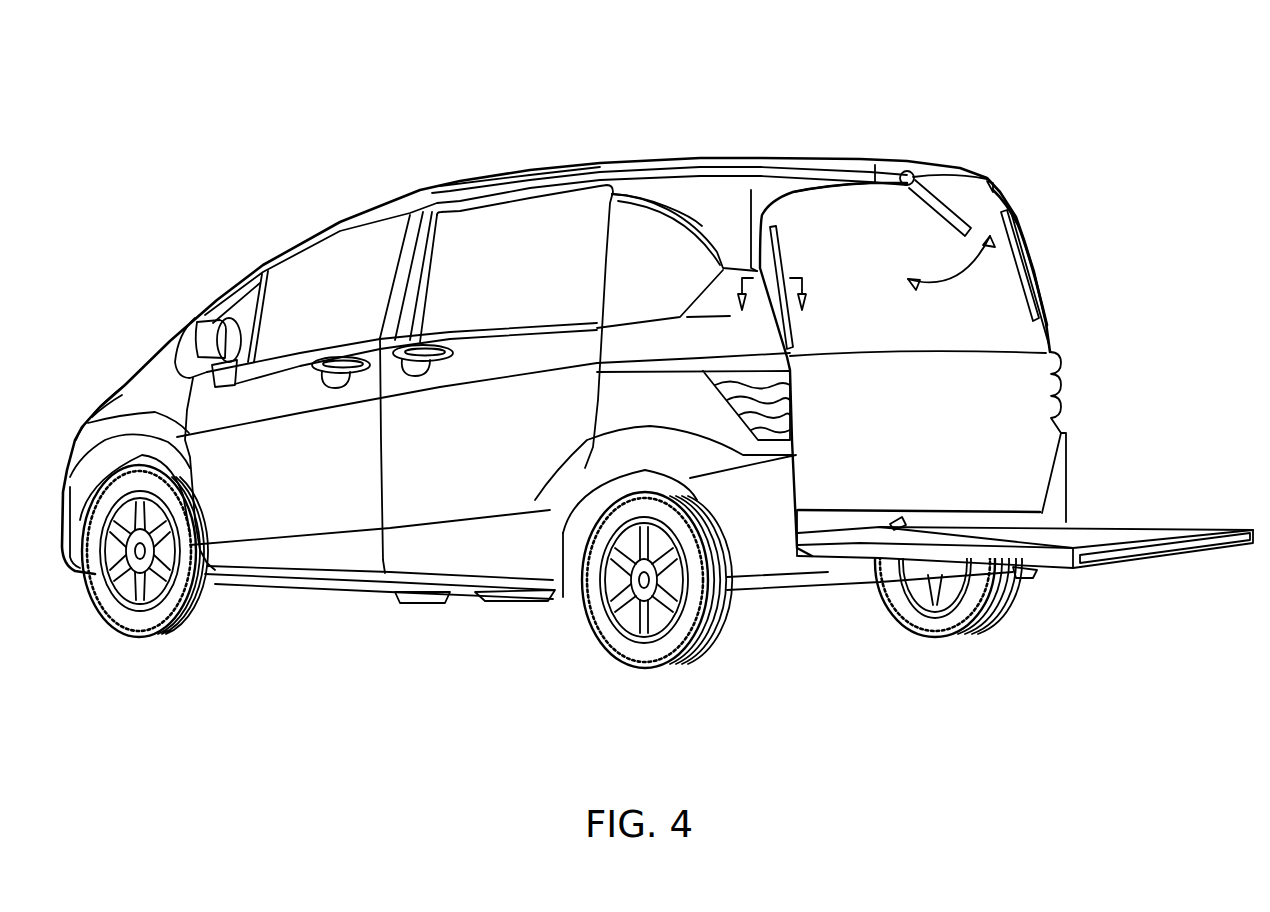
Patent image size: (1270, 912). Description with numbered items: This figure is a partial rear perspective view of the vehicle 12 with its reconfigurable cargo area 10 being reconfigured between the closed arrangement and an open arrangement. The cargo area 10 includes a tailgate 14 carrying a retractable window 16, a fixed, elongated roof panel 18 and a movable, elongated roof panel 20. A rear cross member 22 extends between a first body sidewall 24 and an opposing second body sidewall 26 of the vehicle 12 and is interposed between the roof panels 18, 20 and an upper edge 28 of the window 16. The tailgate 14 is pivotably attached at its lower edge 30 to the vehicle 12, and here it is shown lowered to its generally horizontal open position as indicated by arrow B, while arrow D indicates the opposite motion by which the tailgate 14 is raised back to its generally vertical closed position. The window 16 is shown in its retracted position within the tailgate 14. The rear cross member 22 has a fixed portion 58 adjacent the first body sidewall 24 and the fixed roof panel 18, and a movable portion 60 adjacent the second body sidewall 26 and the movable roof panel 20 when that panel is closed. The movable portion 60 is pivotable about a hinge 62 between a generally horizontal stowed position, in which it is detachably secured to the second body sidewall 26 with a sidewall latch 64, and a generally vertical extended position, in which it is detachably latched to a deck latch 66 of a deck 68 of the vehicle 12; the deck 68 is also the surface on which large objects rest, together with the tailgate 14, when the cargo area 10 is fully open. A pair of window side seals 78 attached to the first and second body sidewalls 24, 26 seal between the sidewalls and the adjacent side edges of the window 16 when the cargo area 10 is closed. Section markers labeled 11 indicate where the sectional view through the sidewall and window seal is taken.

The reconfigurable cargo area 10 is at (1049, 92).
The section line 11 is at (770, 306).
The vehicle 12 is at (564, 380).
The tailgate 14 is at (1190, 518).
The retractable window 16 is at (1200, 548).
The fixed roof panel 18 is at (738, 176).
The movable roof panel 20 is at (738, 176).
The rear cross member 22 is at (876, 165).
The first body sidewall 24 is at (702, 192).
The second body sidewall 26 is at (1029, 257).
The upper edge 28 is at (976, 190).
The lower edge 30 is at (866, 530).
The fixed portion 58 is at (828, 185).
The movable portion 60 is at (953, 207).
The hinge 62 is at (908, 170).
The sidewall latch 64 is at (1003, 190).
The deck latch 66 is at (899, 518).
The deck 68 is at (818, 518).
The window side seals 78 is at (778, 240).
The arrow B is at (1172, 388).
The arrow D is at (1203, 276).